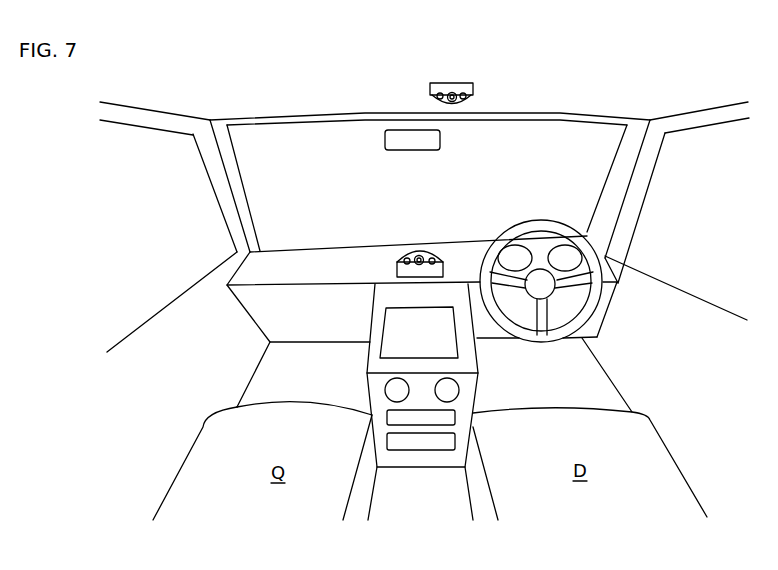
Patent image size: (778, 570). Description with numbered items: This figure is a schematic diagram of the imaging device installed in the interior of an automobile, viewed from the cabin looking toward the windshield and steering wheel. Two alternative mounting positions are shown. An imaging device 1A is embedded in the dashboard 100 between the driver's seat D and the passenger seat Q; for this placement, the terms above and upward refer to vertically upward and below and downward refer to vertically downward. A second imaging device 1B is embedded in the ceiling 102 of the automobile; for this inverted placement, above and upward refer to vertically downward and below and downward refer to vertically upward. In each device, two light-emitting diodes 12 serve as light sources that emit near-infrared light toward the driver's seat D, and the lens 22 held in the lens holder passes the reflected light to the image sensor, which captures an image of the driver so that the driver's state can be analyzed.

The imaging device 1A is at (444, 247).
The imaging device 1B is at (468, 97).
The light-emitting diode 12 is at (406, 258).
The lens 22 is at (419, 255).
The dashboard 100 is at (365, 270).
The ceiling 102 is at (366, 92).